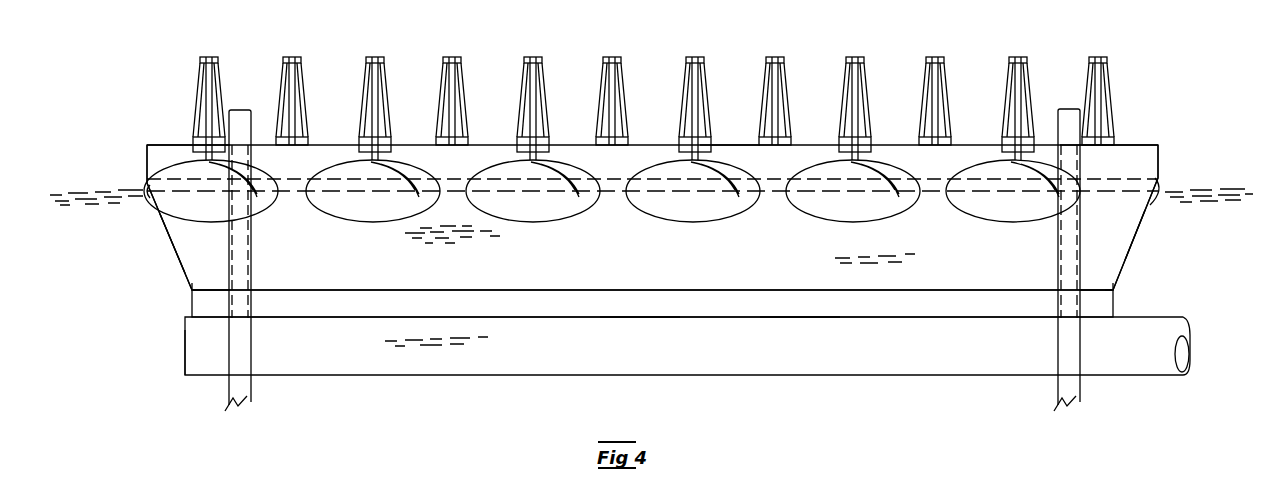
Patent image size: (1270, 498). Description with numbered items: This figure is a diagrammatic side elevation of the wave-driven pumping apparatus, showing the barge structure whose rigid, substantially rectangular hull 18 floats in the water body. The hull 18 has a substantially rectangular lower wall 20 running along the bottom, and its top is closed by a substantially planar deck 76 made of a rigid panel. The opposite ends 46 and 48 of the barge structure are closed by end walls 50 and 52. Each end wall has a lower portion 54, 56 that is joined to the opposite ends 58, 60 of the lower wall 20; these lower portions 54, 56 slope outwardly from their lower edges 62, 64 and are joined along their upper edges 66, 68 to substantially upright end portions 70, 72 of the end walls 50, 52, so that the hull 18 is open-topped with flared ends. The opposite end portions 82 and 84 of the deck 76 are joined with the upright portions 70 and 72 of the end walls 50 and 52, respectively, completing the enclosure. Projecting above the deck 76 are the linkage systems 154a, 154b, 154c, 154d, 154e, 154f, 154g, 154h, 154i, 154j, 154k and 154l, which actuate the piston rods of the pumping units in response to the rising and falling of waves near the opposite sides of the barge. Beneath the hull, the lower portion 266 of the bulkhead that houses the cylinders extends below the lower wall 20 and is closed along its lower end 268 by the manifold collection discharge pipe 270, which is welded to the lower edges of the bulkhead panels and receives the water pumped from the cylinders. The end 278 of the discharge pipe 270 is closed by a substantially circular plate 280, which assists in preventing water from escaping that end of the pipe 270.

The hull 18 is at (618, 248).
The lower wall 20 is at (690, 288).
The end of the barge structure 46 is at (130, 176).
The end of the barge structure 48 is at (1190, 162).
The end wall 50 is at (161, 245).
The end wall 52 is at (1151, 226).
The lower portion of end wall 54 is at (180, 265).
The lower portion of end wall 56 is at (1135, 236).
The end of the lower wall 58 is at (200, 290).
The end of the lower wall 60 is at (1096, 288).
The lower edge 62 is at (190, 292).
The lower edge 64 is at (1114, 290).
The upper edge 66 is at (147, 193).
The upper edge 68 is at (1160, 188).
The upright end portion 70 is at (147, 155).
The upright end portion 72 is at (1160, 147).
The deck 76 is at (728, 134).
The end portion of the deck 82 is at (168, 143).
The end portion of the deck 84 is at (1137, 143).
The linkage system 154a is at (225, 60).
The linkage system 154b is at (305, 59).
The linkage system 154c is at (388, 59).
The linkage system 154d is at (465, 59).
The linkage system 154e is at (546, 59).
The linkage system 154f is at (625, 59).
The linkage system 154g is at (708, 59).
The linkage system 154h is at (788, 59).
The linkage system 154i is at (868, 59).
The linkage system 154j is at (948, 59).
The linkage system 154k is at (1031, 59).
The linkage system 154l is at (1111, 59).
The lower portion of the bulkhead 266 is at (635, 308).
The lower end of the bulkhead 268 is at (798, 310).
The manifold collection discharge pipe 270 is at (578, 366).
The end of discharge pipe 278 is at (207, 343).
The circular plate 280 is at (185, 362).